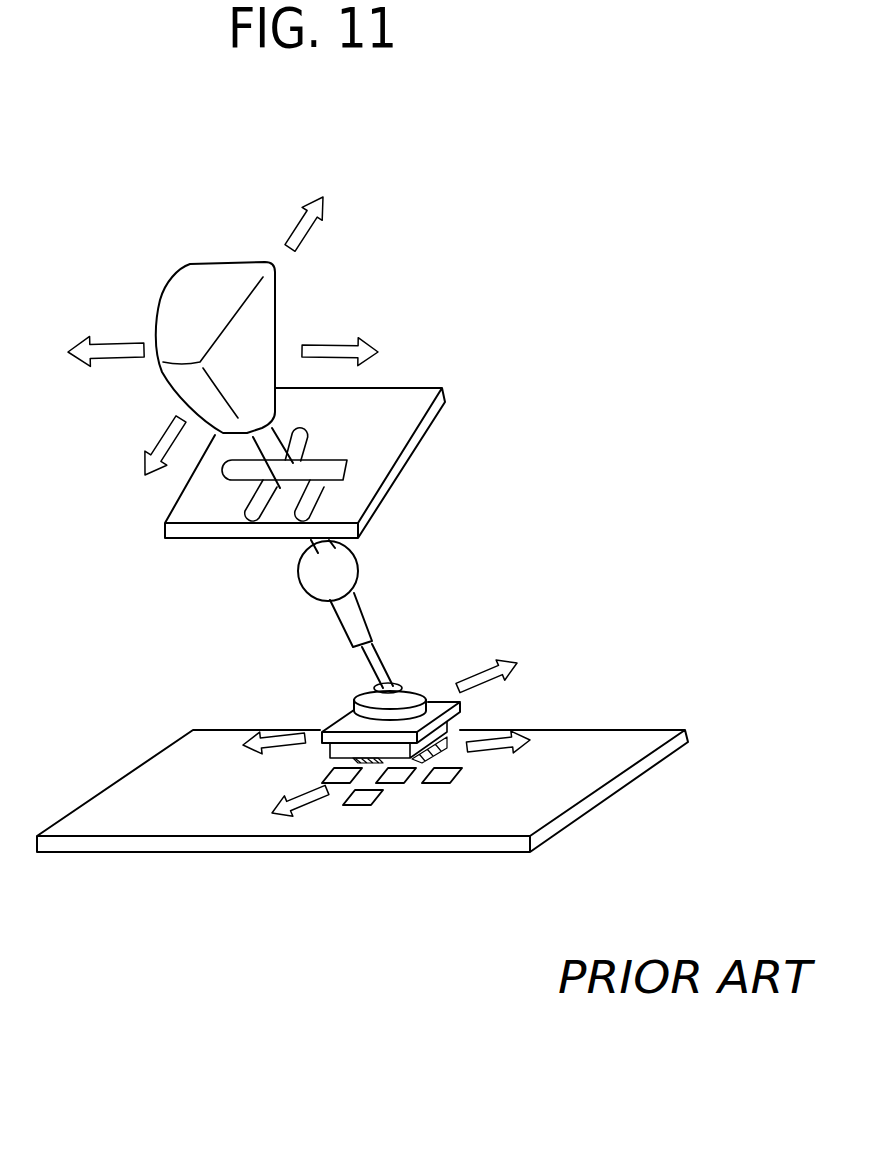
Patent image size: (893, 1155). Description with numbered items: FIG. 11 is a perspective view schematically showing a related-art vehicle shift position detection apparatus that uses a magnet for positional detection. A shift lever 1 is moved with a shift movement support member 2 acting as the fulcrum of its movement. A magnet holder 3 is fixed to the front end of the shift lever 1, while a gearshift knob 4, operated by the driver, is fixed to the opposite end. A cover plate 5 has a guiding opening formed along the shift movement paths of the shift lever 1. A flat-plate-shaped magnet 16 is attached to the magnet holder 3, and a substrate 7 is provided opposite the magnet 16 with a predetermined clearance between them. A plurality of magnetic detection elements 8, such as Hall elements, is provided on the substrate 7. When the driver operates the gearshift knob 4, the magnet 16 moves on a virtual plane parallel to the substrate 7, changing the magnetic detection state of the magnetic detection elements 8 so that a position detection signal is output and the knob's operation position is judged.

The shift lever 1 is at (280, 427).
The shift movement support member 2 is at (350, 566).
The magnet holder 3 is at (432, 704).
The gearshift knob 4 is at (210, 278).
The cover plate 5 is at (397, 427).
The substrate 7 is at (570, 792).
The magnetic detection elements 8 is at (447, 772).
The magnet 16 is at (467, 720).